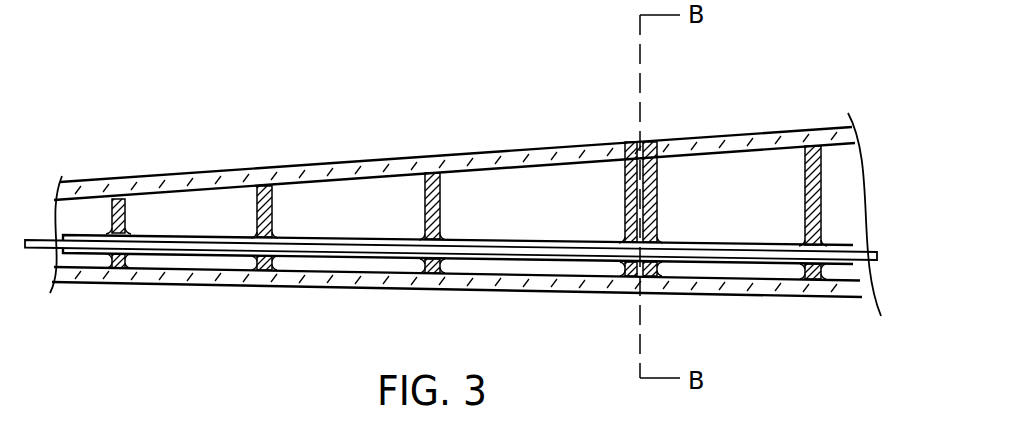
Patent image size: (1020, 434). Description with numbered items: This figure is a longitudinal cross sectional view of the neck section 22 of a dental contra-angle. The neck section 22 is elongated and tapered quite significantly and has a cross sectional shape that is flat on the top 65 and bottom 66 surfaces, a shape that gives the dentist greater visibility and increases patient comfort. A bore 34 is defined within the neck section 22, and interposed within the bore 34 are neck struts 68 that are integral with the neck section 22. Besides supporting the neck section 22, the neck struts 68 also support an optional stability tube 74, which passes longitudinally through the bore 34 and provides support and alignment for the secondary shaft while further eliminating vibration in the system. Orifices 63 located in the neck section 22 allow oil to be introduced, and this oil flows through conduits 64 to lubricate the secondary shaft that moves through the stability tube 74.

The neck section 22 is at (153, 337).
The bore 34 is at (720, 221).
The orifices 63 is at (683, 108).
The conduits 64 is at (625, 205).
The top surface 65 is at (481, 152).
The bottom surface 66 is at (564, 294).
The neck struts 68 is at (126, 214).
The stability tube 74 is at (451, 280).